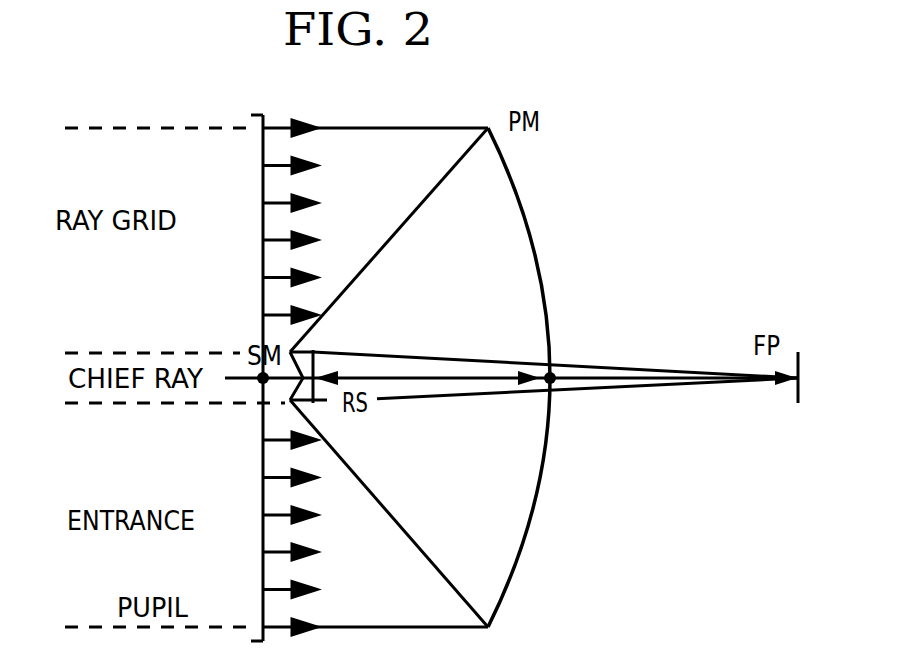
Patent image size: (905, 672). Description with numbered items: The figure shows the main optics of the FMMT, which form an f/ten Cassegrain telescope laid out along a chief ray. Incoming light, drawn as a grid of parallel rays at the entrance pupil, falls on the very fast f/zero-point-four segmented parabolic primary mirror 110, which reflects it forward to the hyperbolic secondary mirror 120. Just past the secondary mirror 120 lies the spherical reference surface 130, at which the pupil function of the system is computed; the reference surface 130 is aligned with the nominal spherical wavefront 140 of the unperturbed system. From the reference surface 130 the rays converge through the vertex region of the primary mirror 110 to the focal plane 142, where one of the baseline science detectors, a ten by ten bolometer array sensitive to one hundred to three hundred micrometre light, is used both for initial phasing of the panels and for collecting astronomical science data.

The segmented parabolic primary mirror 110 is at (532, 238).
The hyperbolic secondary mirror 120 is at (297, 351).
The spherical reference surface 130 is at (312, 416).
The nominal spherical wavefront 140 is at (262, 178).
The focal plane 142 is at (798, 352).